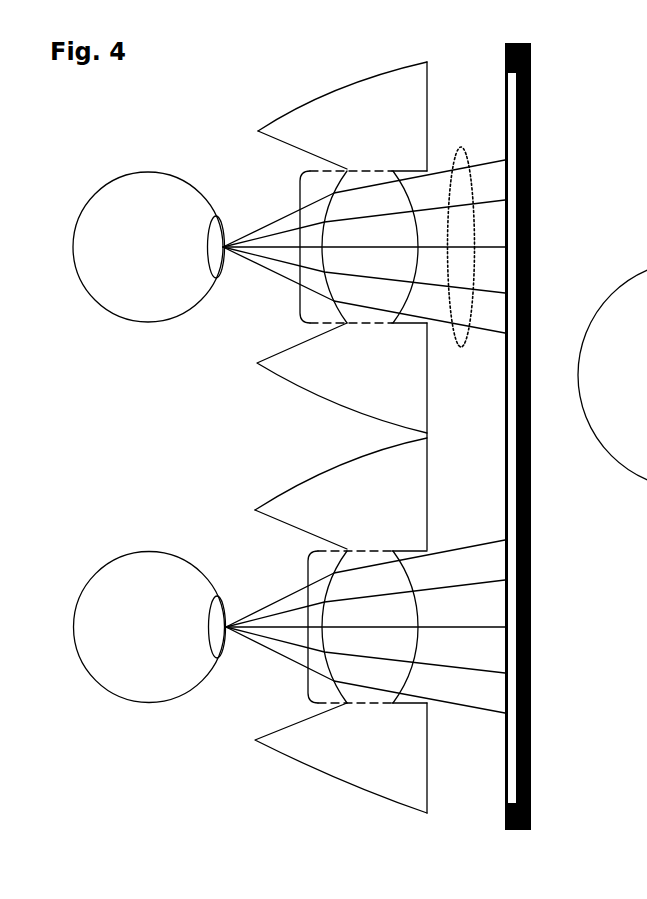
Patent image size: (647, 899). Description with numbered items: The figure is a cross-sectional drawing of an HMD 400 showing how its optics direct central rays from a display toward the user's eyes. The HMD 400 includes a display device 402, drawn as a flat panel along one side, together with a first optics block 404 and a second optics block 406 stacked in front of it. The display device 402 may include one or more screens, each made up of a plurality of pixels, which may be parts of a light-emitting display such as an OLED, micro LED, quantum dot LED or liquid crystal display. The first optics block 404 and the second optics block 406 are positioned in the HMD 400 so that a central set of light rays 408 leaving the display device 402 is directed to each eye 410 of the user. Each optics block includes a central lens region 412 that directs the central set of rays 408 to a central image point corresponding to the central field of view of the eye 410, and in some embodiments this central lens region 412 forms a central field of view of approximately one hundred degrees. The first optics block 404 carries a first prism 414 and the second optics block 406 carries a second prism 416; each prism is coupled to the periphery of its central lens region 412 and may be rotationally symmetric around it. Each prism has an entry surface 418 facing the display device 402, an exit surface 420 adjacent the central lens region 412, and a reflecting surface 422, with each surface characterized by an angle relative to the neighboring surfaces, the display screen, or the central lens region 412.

The HMD 400 is at (556, 148).
The display device 402 is at (531, 730).
The first optics block 404 is at (294, 94).
The second optics block 406 is at (278, 480).
The central set of light rays 408 is at (473, 181).
The eye 410 is at (157, 228).
The central lens region 412 is at (300, 296).
The first prism 414 is at (400, 113).
The second prism 416 is at (400, 483).
The entry surface 418 is at (482, 66).
The exit surface 420 is at (275, 140).
The reflecting surface 422 is at (397, 67).